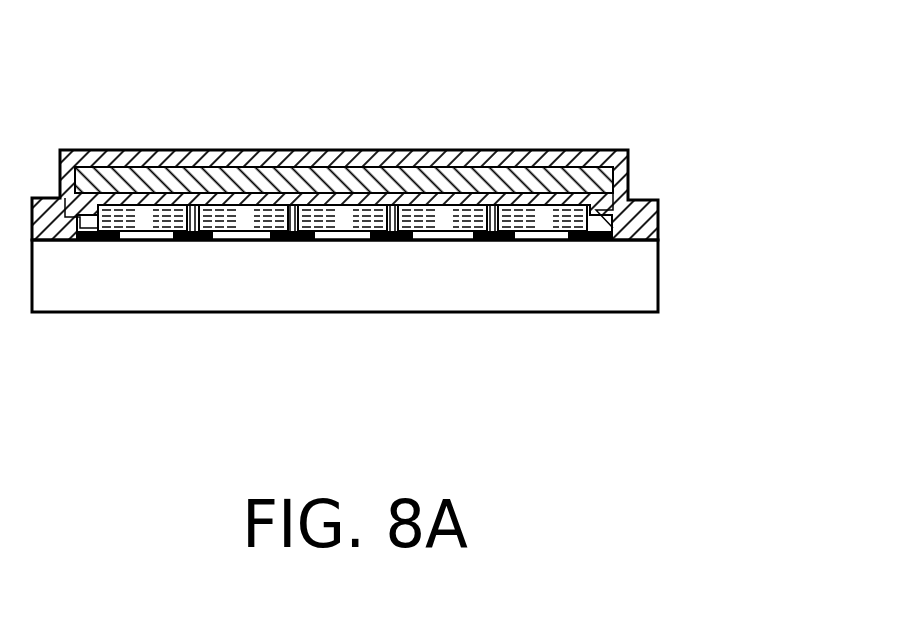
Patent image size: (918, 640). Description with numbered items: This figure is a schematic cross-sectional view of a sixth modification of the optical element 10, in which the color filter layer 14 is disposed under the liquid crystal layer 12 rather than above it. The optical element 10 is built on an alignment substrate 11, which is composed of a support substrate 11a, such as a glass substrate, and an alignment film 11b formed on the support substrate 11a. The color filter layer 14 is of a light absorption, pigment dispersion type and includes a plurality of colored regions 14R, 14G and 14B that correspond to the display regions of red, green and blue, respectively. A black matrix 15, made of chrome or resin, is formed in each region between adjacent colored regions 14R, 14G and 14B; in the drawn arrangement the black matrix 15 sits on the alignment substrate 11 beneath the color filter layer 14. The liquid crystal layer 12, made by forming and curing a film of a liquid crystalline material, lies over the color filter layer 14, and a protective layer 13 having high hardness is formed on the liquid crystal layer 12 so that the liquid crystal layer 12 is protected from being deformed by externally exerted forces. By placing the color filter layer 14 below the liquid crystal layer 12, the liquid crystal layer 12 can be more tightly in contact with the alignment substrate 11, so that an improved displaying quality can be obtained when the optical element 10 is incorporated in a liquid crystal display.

The optical element 10 is at (655, 80).
The alignment substrate 11 is at (770, 215).
The support substrate 11a is at (640, 282).
The alignment film 11b is at (605, 240).
The liquid crystal layer 12 is at (628, 184).
The protective layer 13 is at (627, 152).
The color filter layer 14 is at (407, 65).
The colored region 14R is at (163, 207).
The colored region 14G is at (268, 207).
The colored region 14B is at (370, 207).
The black matrix 15 is at (93, 240).